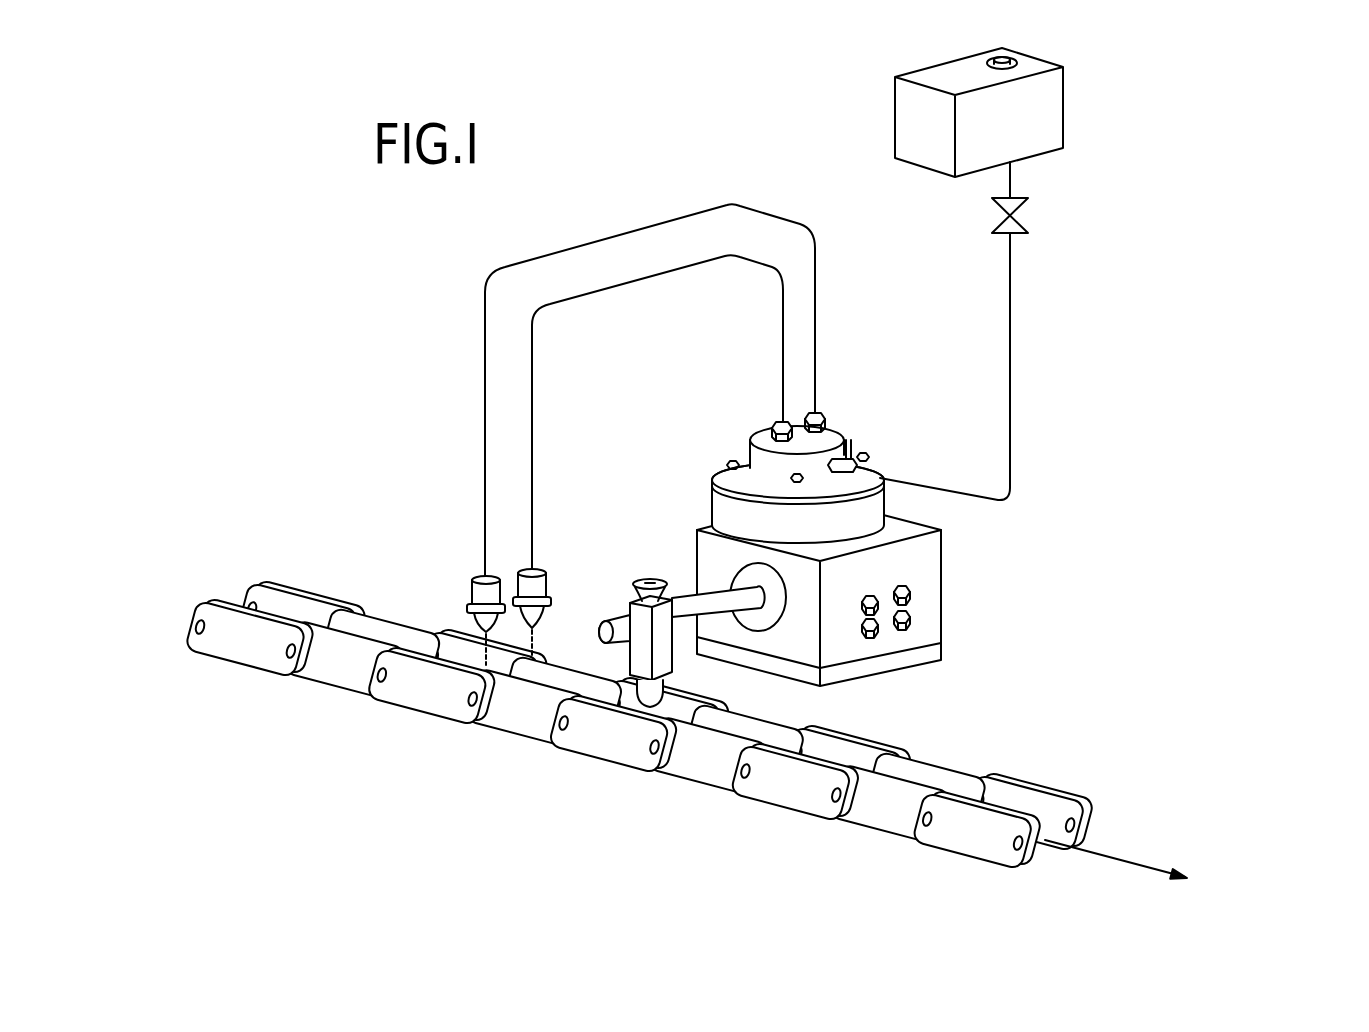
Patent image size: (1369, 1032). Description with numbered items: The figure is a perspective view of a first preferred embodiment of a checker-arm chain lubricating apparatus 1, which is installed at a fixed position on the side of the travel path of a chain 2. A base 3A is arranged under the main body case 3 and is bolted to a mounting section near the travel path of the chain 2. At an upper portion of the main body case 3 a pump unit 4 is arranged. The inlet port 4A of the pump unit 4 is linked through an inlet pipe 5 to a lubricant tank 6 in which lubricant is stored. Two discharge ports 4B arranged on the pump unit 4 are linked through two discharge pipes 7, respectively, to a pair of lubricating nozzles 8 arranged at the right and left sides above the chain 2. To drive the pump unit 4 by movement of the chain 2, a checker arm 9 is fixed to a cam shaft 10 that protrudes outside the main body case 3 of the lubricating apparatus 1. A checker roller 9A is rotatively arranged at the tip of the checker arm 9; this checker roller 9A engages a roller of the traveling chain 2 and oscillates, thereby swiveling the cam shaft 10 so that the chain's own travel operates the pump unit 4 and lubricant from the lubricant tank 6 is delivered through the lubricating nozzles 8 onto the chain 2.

The lubricating apparatus 1 is at (962, 553).
The chain 2 is at (957, 775).
The main body case 3 is at (935, 600).
The base 3A is at (918, 652).
The pump unit 4 is at (888, 495).
The inlet port 4A is at (850, 440).
The discharge ports 4B is at (780, 420).
The inlet pipe 5 is at (1010, 322).
The lubricant tank 6 is at (1052, 93).
The discharge pipes 7 is at (815, 303).
The lubricating nozzles 8 is at (470, 592).
The checker arm 9 is at (690, 671).
The checker roller 9A is at (650, 710).
The cam shaft 10 is at (687, 600).